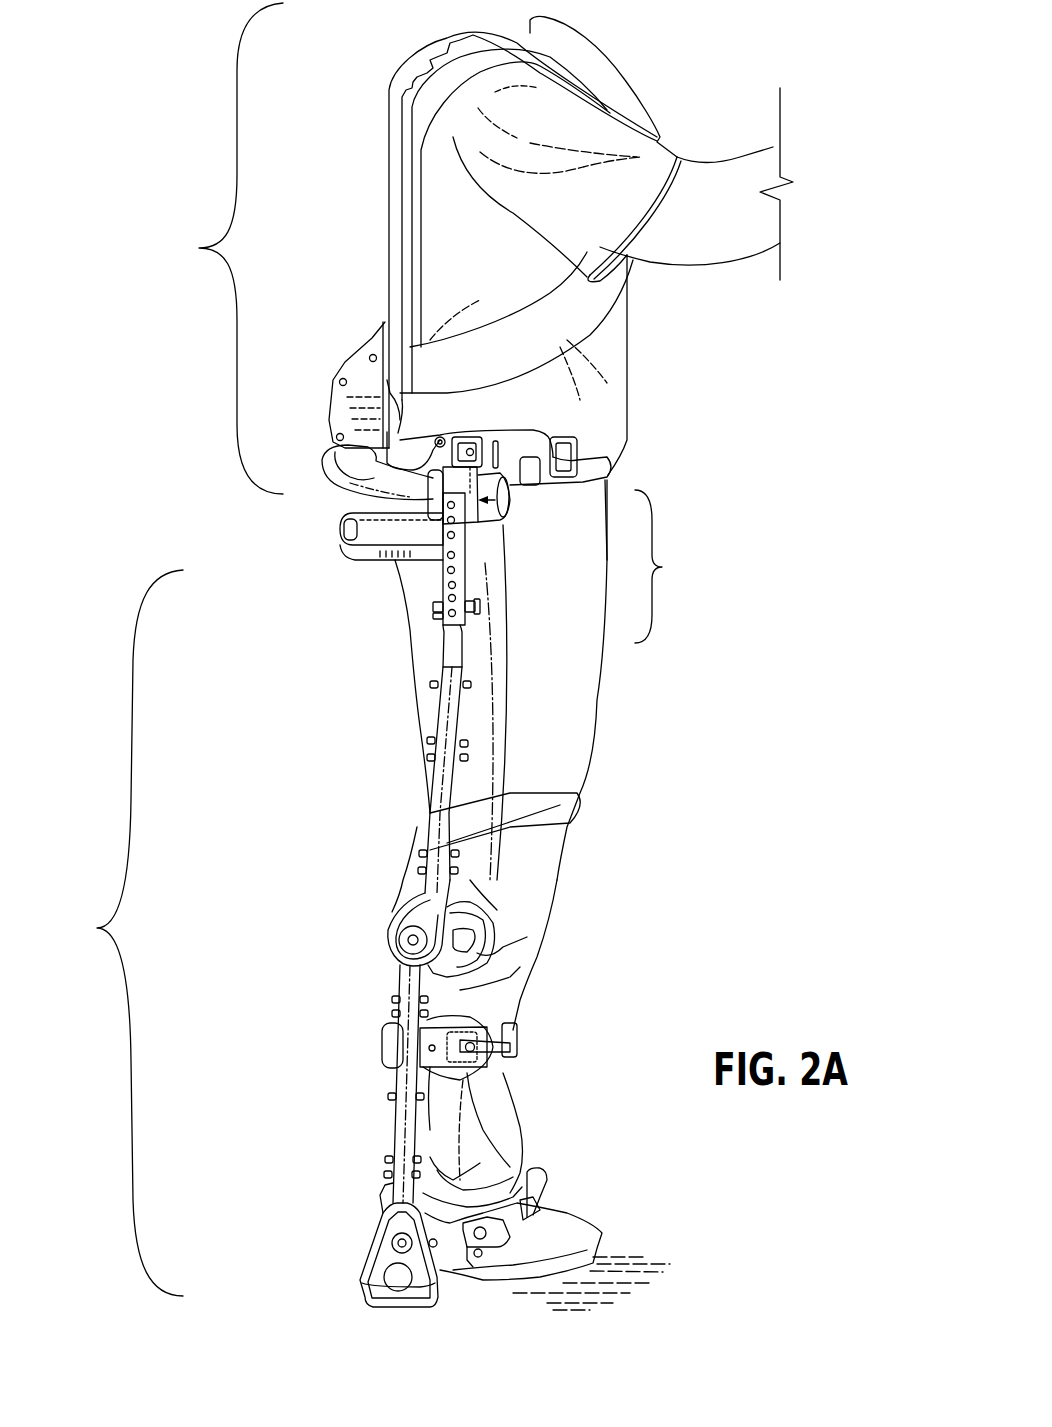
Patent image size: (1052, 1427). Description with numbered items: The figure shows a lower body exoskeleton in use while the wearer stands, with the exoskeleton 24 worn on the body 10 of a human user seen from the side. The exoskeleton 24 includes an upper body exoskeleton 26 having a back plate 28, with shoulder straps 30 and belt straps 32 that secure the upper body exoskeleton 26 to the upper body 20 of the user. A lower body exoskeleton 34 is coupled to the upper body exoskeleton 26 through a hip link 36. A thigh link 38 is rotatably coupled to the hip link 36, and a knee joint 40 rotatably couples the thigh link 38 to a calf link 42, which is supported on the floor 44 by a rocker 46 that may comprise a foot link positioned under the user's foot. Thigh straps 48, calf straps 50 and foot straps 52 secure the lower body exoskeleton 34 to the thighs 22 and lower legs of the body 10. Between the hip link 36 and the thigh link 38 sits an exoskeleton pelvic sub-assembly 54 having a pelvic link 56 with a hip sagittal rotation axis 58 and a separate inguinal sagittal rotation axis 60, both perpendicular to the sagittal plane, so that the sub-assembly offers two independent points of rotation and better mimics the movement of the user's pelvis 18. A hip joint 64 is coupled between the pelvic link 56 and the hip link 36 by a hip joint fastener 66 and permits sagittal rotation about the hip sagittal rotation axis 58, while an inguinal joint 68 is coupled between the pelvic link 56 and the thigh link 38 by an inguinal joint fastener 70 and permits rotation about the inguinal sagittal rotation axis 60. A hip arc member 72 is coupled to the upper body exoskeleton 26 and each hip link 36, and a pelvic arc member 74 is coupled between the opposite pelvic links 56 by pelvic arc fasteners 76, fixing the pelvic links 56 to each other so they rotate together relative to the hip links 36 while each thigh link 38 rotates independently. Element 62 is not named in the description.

The body 10 is at (675, 378).
The pelvis 18 is at (595, 557).
The upper body 20 is at (527, 307).
The thighs 22 is at (525, 699).
The exoskeleton 24 is at (150, 263).
The upper body exoskeleton 26 is at (225, 248).
The back plate 28 is at (400, 278).
The shoulder straps 30 is at (573, 74).
The belt straps 32 is at (603, 463).
The lower body exoskeleton 34 is at (121, 933).
The hip link 36 is at (517, 490).
The thigh link 38 is at (457, 715).
The knee joint 40 is at (370, 944).
The calf link 42 is at (408, 1130).
The floor 44 is at (575, 1303).
The rocker 46 is at (322, 1311).
The thigh straps 48 is at (557, 817).
The calf straps 50 is at (517, 1042).
The foot straps 52 is at (541, 1199).
The exoskeleton pelvic sub-assembly 54 is at (664, 566).
The pelvic link 56 is at (449, 508).
The hip sagittal rotation axis 58 is at (520, 500).
The inguinal sagittal rotation axis 60 is at (478, 638).
The hip bracket 62 is at (452, 520).
The hip joint 64 is at (353, 512).
The hip joint fastener 66 is at (352, 549).
The inguinal joint 68 is at (443, 632).
The inguinal joint fastener 70 is at (432, 618).
The hip arc member 72 is at (345, 481).
The pelvic arc member 74 is at (375, 560).
The pelvic arc fasteners 76 is at (444, 572).